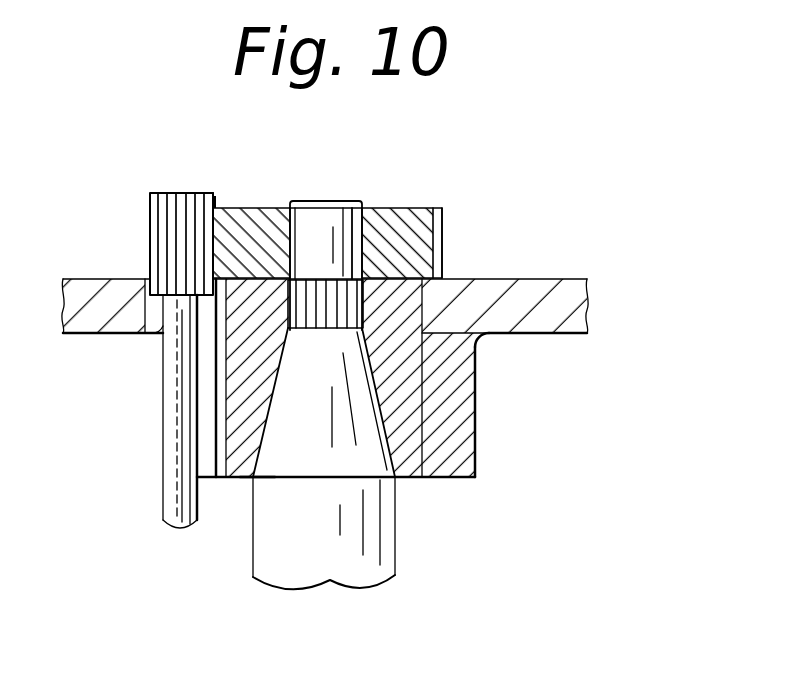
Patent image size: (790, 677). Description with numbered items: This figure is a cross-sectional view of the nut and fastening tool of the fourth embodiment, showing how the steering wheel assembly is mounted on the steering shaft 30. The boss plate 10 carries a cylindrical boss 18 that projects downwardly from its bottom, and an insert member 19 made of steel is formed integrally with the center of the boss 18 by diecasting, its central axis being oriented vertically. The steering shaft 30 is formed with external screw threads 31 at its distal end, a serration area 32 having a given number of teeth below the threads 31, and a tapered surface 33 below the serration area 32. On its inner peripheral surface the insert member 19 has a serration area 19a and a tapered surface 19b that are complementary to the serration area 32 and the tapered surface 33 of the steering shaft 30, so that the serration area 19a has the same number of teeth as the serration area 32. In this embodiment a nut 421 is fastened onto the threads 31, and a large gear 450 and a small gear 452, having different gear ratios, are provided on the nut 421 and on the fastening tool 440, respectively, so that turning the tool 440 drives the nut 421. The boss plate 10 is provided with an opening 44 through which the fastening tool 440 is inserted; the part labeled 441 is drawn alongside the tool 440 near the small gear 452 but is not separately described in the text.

The boss plate 10 is at (565, 307).
The cylindrical boss 18 is at (462, 444).
The insert member 19 is at (408, 480).
The serration area 19a is at (480, 340).
The tapered surface 19b is at (262, 477).
The steering shaft 30 is at (395, 556).
The external screw threads 31 is at (315, 222).
The serration area 32 is at (352, 297).
The tapered surface 33 is at (372, 420).
The opening 44 is at (148, 310).
The nut 421 is at (400, 222).
The fastening tool 440 is at (163, 452).
The sleeve block 441 is at (150, 225).
The large gear 450 is at (442, 211).
The small gear 452 is at (213, 195).